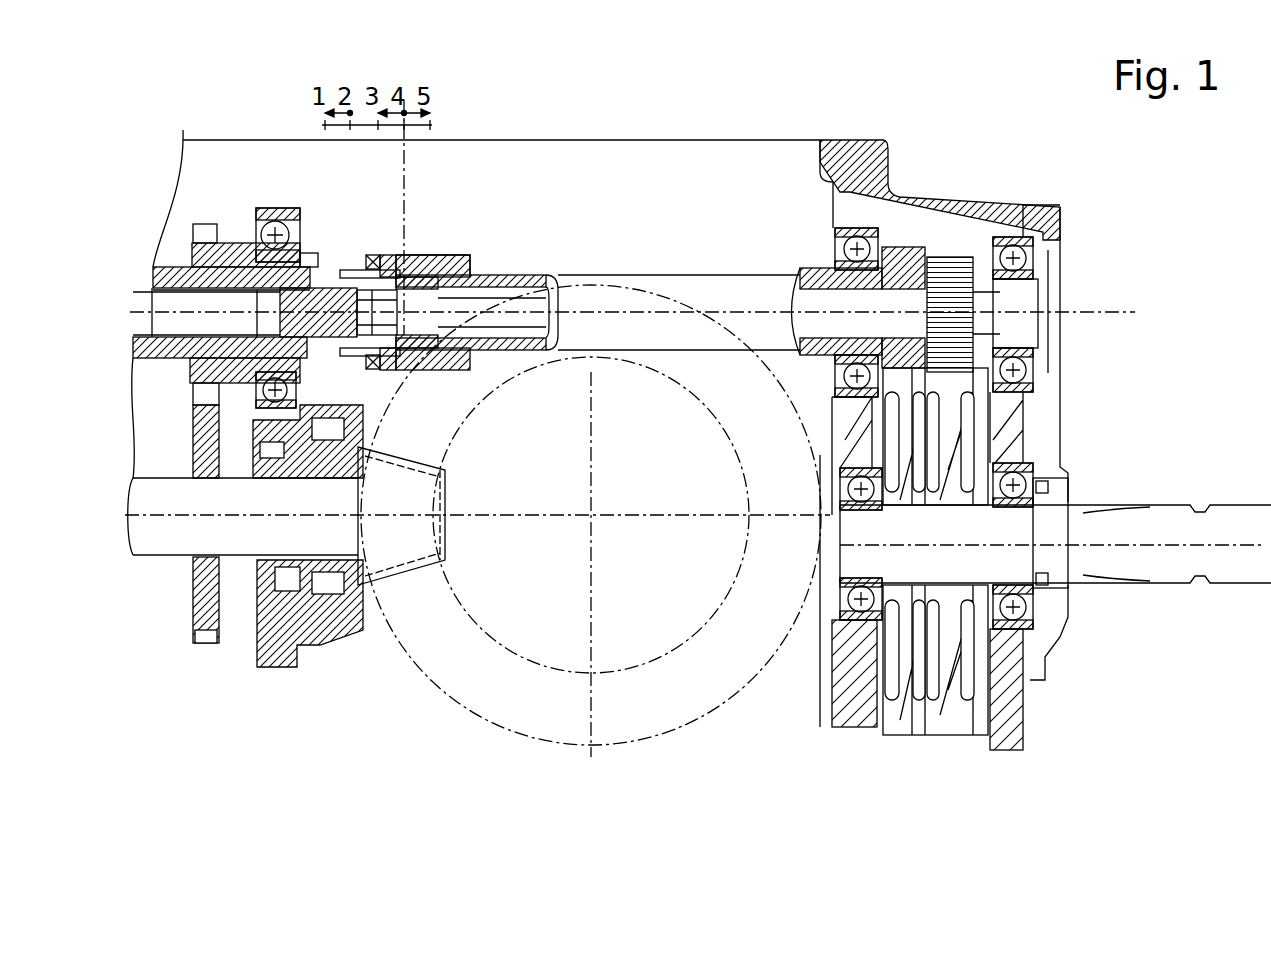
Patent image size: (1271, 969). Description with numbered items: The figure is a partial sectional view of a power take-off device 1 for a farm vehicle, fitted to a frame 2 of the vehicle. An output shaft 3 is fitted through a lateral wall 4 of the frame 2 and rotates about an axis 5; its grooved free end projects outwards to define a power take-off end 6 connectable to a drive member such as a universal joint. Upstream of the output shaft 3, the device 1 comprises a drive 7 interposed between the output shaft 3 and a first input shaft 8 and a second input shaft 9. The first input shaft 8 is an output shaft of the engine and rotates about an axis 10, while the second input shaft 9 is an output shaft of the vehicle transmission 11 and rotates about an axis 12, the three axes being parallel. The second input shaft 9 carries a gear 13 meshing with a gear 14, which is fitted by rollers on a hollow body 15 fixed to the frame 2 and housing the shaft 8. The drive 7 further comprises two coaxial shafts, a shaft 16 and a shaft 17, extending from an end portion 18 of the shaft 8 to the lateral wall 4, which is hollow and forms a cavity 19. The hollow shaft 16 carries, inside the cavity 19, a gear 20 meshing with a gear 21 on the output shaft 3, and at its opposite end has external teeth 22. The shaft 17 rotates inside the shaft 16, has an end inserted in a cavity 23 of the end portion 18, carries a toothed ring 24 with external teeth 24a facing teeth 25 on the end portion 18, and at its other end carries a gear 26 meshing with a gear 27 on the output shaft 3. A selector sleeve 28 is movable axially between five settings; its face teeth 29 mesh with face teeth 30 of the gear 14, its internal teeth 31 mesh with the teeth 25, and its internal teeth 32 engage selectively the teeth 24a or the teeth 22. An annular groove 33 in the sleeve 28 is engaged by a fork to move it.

The power take-off device 1 is at (855, 95).
The frame 2 is at (535, 138).
The output shaft 3 is at (1084, 592).
The lateral wall 4 is at (947, 195).
The axis 5 is at (1228, 545).
The power take-off end 6 is at (1145, 528).
The drive 7 is at (583, 243).
The first input shaft 8 is at (160, 300).
The second input shaft 9 is at (172, 542).
The axis 10 is at (135, 318).
The vehicle transmission 11 is at (468, 714).
The axis 12 is at (192, 515).
The gear 13 is at (215, 620).
The gear 14 is at (205, 245).
The hollow body 15 is at (160, 270).
The shaft 16 is at (800, 280).
The shaft 17 is at (815, 298).
The end portion 18 is at (332, 290).
The cavity 19 is at (955, 228).
The gear 20 is at (900, 270).
The gear 21 is at (910, 695).
The external teeth 22 is at (473, 277).
The cavity 23 is at (365, 350).
The toothed ring 24 is at (428, 255).
The external teeth 24a is at (440, 260).
The teeth 25 is at (357, 277).
The gear 26 is at (958, 298).
The gear 27 is at (953, 437).
The sleeve 28 is at (373, 255).
The face teeth 29 is at (362, 255).
The face teeth 30 is at (305, 255).
The internal teeth 31 is at (392, 375).
The internal teeth 32 is at (472, 363).
The annular groove 33 is at (403, 378).